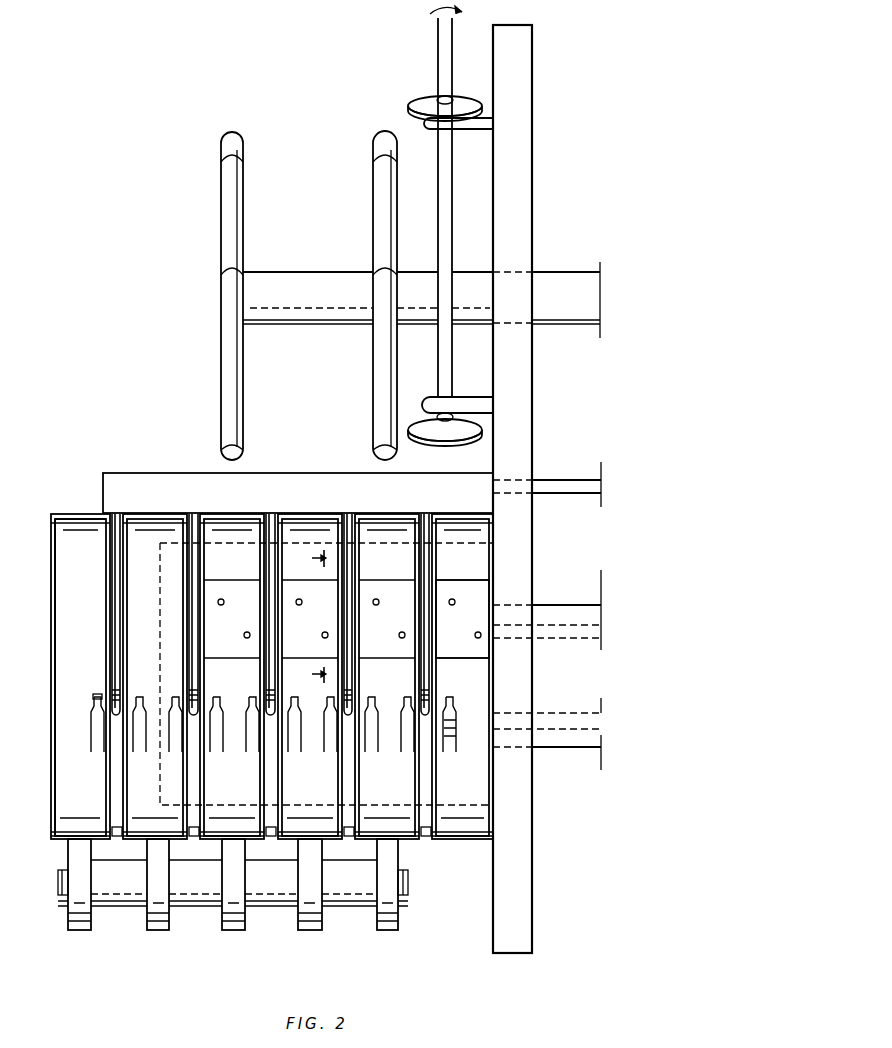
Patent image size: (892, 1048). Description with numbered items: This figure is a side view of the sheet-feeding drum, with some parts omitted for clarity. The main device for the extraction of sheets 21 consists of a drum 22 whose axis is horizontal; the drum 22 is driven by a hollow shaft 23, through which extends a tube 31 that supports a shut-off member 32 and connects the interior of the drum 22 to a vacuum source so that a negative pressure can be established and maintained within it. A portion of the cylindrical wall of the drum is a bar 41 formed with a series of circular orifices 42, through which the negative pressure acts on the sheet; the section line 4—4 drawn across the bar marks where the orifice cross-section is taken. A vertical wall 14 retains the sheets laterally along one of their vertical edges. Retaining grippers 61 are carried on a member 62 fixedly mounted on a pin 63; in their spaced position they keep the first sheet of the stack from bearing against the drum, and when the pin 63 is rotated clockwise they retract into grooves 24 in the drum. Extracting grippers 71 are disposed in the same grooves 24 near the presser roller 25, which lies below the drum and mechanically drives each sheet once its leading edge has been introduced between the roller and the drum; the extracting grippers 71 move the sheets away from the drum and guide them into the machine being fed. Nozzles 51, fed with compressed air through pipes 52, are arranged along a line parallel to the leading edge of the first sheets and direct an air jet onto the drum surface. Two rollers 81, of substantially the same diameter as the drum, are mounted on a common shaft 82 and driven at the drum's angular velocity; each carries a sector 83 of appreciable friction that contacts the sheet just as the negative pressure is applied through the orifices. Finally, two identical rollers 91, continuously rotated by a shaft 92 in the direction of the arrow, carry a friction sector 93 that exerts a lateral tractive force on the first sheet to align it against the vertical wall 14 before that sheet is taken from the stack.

The vertical wall 14 is at (524, 50).
The shaft 92 is at (440, 36).
The rollers 91 is at (431, 100).
The friction sector 93 is at (452, 99).
The rollers 81 is at (372, 142).
The sector 83 is at (384, 220).
The shaft 82 is at (548, 290).
The pin 63 is at (554, 490).
The hollow shaft 23 is at (556, 620).
The tube 31 is at (577, 630).
The member 62 is at (194, 488).
The main device for the extraction of sheets 21 is at (68, 514).
The drum 22 is at (83, 528).
The grooves 24 is at (118, 770).
The bar 41 is at (460, 592).
The circular orifices 42 is at (478, 631).
The retaining grippers 61 is at (117, 568).
The shut-off member 32 is at (170, 560).
The pipes 52 is at (92, 716).
The nozzles 51 is at (95, 696).
The extracting grippers 71 is at (104, 834).
The presser roller 25 is at (80, 905).
The section line 4— 4 is at (308, 618).